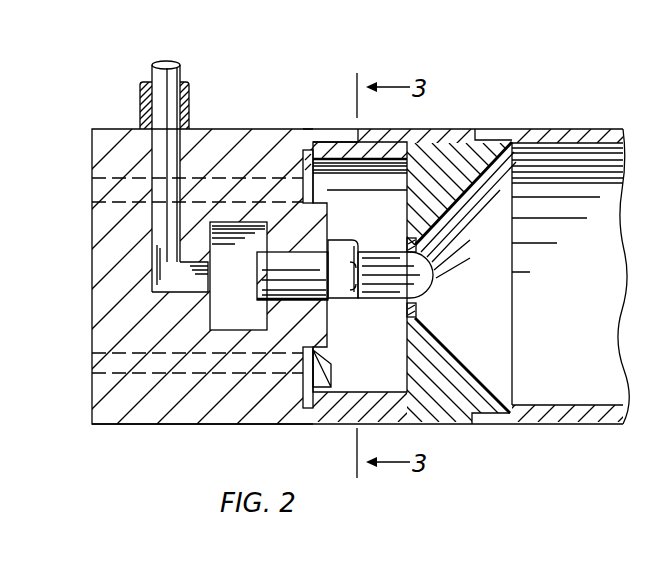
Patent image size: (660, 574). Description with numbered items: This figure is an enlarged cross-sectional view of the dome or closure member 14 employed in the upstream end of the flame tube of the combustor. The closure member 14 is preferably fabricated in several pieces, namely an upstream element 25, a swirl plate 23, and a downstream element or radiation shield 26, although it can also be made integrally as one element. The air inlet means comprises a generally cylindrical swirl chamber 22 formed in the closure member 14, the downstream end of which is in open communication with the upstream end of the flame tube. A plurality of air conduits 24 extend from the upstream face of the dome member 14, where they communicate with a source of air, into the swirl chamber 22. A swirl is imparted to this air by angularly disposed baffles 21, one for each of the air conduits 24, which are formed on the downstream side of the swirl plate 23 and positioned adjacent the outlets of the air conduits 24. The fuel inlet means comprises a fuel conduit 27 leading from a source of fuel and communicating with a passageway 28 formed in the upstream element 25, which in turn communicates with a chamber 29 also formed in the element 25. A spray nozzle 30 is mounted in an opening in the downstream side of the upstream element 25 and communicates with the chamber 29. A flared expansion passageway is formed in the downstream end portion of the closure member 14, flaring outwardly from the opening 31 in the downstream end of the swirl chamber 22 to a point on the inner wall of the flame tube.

The dome or closure member 14 is at (187, 440).
The angularly disposed baffles 21 is at (326, 362).
The swirl chamber 22 is at (386, 363).
The swirl plate 23 is at (305, 410).
The air conduits 24 is at (232, 188).
The upstream element 25 is at (256, 416).
The downstream element or radiation shield 26 is at (447, 131).
The fuel conduit 27 is at (178, 65).
The passageway 28 is at (190, 289).
The chamber 29 is at (253, 326).
The spray nozzle 30 is at (433, 268).
The opening 31 is at (416, 309).